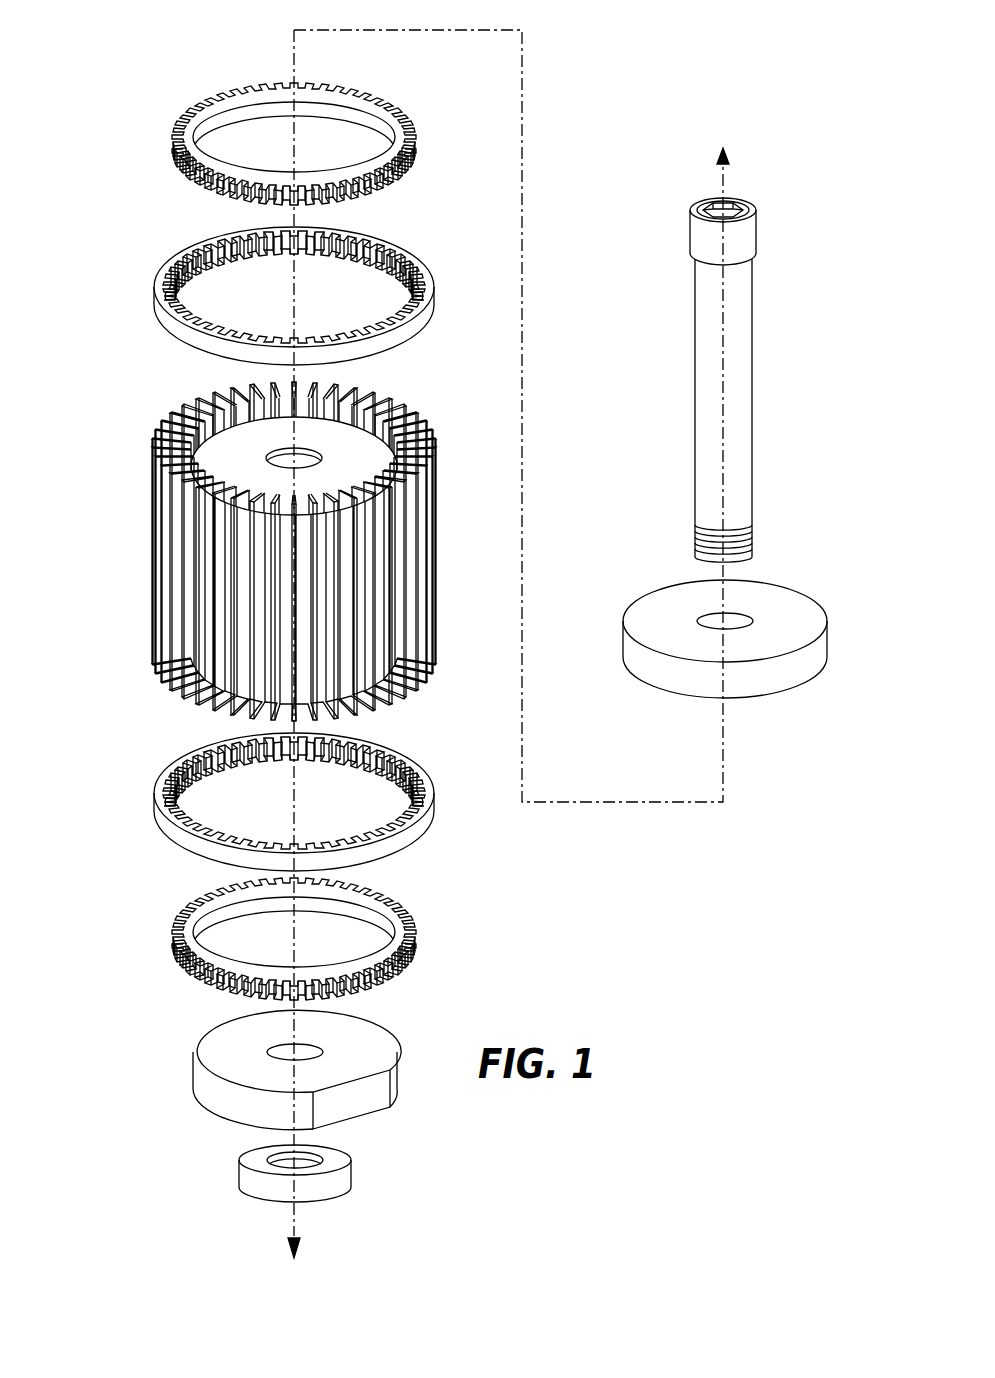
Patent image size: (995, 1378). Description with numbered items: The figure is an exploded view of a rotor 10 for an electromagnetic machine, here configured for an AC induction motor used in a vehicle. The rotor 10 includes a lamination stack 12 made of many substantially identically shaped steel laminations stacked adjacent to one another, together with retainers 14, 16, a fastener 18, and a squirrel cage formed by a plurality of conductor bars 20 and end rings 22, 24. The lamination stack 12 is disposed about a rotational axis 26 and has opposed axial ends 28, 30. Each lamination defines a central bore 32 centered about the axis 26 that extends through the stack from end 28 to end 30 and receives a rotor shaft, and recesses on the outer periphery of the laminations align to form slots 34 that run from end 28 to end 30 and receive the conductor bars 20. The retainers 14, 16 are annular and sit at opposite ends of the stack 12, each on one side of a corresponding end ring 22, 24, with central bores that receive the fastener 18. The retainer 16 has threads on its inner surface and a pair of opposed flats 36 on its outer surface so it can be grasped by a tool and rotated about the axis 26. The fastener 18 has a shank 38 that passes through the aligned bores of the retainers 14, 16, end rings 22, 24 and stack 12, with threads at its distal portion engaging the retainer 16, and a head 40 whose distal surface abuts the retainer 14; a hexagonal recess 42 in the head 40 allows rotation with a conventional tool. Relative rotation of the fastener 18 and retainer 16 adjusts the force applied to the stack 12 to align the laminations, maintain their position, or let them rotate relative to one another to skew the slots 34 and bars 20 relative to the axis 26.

The rotor 10 is at (86, 106).
The lamination stack 12 is at (98, 529).
The retainer 14 is at (772, 592).
The retainer 16 is at (225, 1047).
The fastener 18 is at (782, 310).
The conductor bars 20 is at (157, 440).
The end ring 22 is at (153, 75).
The end ring 24 is at (153, 740).
The rotational axis 26 is at (295, 1221).
The axial end 28 is at (321, 441).
The axial end 30 is at (315, 716).
The central bore 32 is at (228, 421).
The slots 34 is at (262, 551).
The flats 36 is at (360, 1097).
The shank 38 is at (733, 410).
The head 40 is at (745, 240).
The hexagonal recess 42 is at (735, 200).